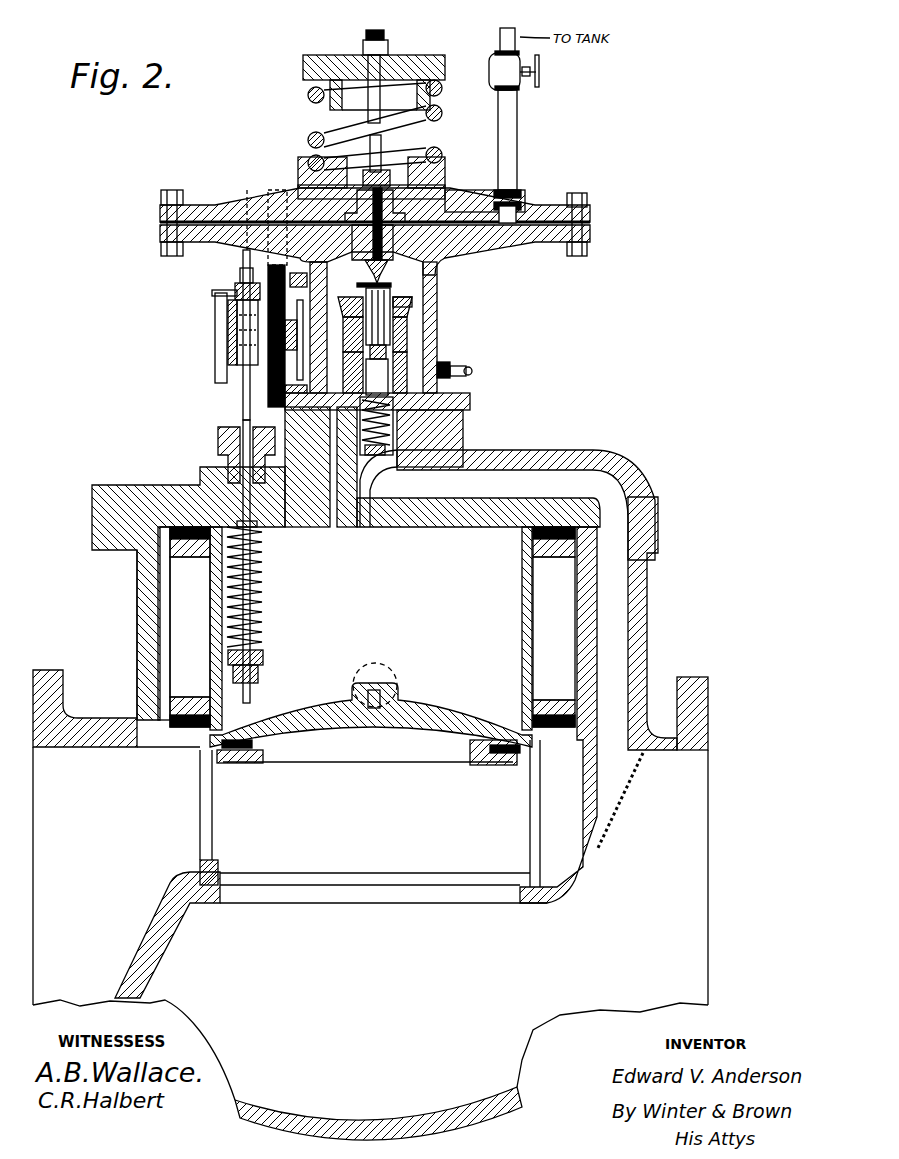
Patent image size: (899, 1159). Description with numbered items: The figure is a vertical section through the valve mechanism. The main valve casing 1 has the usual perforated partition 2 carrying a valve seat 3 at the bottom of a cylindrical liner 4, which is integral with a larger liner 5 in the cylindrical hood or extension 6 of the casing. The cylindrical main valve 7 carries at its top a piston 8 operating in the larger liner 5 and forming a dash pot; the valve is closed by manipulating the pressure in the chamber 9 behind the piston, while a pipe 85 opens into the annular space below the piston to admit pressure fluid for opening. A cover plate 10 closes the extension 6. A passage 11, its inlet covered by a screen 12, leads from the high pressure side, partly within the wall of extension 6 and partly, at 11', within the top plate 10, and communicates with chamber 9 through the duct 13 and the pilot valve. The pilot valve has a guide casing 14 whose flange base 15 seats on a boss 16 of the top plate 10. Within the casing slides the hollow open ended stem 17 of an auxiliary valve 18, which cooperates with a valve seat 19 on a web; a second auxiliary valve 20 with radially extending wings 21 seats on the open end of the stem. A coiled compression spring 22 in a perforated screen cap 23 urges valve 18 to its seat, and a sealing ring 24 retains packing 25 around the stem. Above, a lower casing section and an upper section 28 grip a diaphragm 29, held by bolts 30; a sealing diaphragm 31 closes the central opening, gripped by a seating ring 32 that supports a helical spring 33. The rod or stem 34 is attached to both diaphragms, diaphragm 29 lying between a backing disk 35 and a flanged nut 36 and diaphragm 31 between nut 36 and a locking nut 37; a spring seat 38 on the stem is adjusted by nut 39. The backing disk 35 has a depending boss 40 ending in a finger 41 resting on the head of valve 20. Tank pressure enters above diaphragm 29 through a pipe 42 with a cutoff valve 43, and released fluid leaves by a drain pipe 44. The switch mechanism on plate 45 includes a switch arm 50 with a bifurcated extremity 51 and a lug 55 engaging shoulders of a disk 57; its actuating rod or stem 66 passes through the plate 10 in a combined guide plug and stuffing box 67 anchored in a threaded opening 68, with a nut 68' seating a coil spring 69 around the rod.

The main valve casing 1 is at (663, 713).
The perforated partition 2 is at (175, 932).
The valve seat 3 is at (205, 872).
The cylindrical liner 4 is at (200, 770).
The larger liner 5 is at (158, 609).
The cylindrical hood or extension 6 is at (147, 578).
The main valve 7 is at (475, 738).
The piston 8 is at (555, 568).
The chamber 9 is at (371, 637).
The cover plate 10 is at (185, 488).
The passage 11 is at (609, 700).
The passage portion in top plate 11' is at (537, 485).
The screen 12 is at (622, 806).
The duct 13 is at (350, 527).
The guide casing 14 is at (408, 318).
The flange base 15 is at (442, 389).
The boss 16 is at (293, 420).
The hollow open ended stem 17 is at (395, 338).
The auxiliary valve 18 is at (368, 378).
The valve seat 19 is at (407, 365).
The second auxiliary valve 20 is at (438, 286).
The radially extending wings 21 is at (352, 338).
The coiled compression spring 22 is at (392, 440).
The perforated screen cap 23 is at (368, 462).
The sealing ring 24 is at (360, 293).
The packing 25 is at (412, 302).
The upper casing section 28 is at (227, 202).
The diaphragm 29 is at (520, 218).
The bolts 30 is at (592, 207).
The sealing diaphragm 31 is at (430, 160).
The seating ring 32 is at (300, 162).
The helical spring 33 is at (313, 137).
The rod or stem 34 is at (370, 115).
The backing disk 35 is at (400, 233).
The flanged nut 36 is at (460, 200).
The locking nut 37 is at (388, 170).
The spring seat 38 is at (345, 57).
The nut 39 is at (388, 45).
The depending boss 40 is at (358, 254).
The finger 41 is at (384, 278).
The pipe 42 is at (517, 110).
The cutoff valve 43 is at (522, 82).
The drain pipe 44 is at (466, 370).
The plate 45 is at (237, 314).
The switch arm 50 is at (243, 260).
The bifurcated extremity 51 is at (248, 192).
The lug 55 is at (235, 292).
The disk 57 is at (215, 332).
The actuating rod or stem 66 is at (250, 600).
The combined guide plug and stuffing box 67 is at (218, 452).
The threaded opening 68 is at (275, 538).
The nut 68' is at (278, 661).
The coil spring 69 is at (262, 622).
The pipe 85 is at (396, 676).